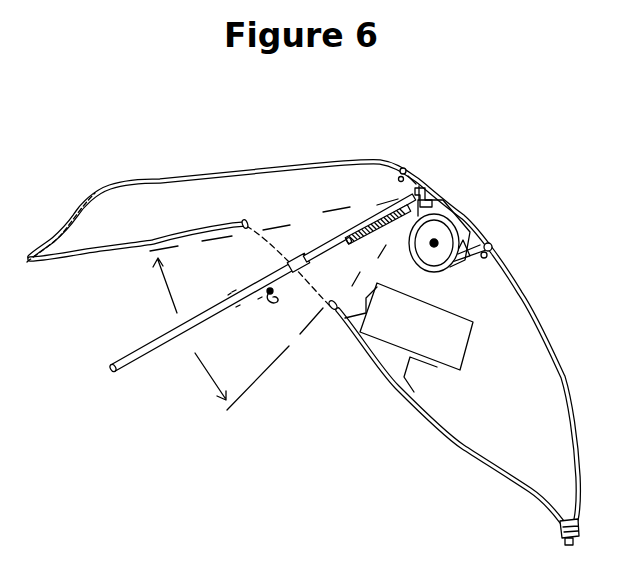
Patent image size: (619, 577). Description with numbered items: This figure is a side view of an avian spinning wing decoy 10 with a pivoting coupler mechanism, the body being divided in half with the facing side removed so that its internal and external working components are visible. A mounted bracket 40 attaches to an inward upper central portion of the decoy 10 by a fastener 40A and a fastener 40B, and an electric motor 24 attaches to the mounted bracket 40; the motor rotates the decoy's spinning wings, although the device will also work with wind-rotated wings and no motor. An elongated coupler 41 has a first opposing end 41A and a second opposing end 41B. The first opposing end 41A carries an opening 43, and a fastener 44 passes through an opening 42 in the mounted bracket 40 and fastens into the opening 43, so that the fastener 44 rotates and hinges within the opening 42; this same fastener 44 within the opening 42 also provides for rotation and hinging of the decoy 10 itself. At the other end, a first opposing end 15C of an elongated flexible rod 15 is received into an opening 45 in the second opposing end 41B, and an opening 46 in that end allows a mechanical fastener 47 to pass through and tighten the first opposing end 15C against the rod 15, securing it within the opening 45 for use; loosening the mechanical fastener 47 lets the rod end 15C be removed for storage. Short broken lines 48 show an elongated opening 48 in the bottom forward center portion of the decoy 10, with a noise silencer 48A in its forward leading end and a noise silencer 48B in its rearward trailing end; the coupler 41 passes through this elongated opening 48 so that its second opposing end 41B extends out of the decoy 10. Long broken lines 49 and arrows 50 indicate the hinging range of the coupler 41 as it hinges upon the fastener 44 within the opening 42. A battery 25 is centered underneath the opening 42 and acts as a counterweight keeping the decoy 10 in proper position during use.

The avian spinning wing decoy 10 is at (548, 333).
The elongated flexible rod 15 is at (119, 373).
The first opposing end of the elongated flexible rod 15C is at (301, 258).
The electric motor 24 is at (442, 254).
The battery 25 is at (458, 341).
The mounted bracket 40 is at (413, 178).
The fastener 40A is at (491, 245).
The fastener 40B is at (403, 168).
The elongated coupler 41 is at (325, 251).
The first opposing end of the elongated coupler 41A is at (413, 198).
The second opposing end of the elongated coupler 41B is at (232, 292).
The opening in the mounted bracket 42 is at (419, 186).
The opening in the first opposing end of the coupler 43 is at (350, 242).
The fastener 44 is at (374, 222).
The opening in the second opposing end of the coupler 45 is at (228, 295).
The opening in the second opposing end of the coupler 46 is at (258, 299).
The mechanical fastener 47 is at (276, 305).
The elongated opening 48 is at (266, 249).
The noise silencer 48A is at (245, 221).
The noise silencer 48B is at (331, 312).
The long broken lines 49 is at (179, 247).
The arrows 50 is at (168, 289).